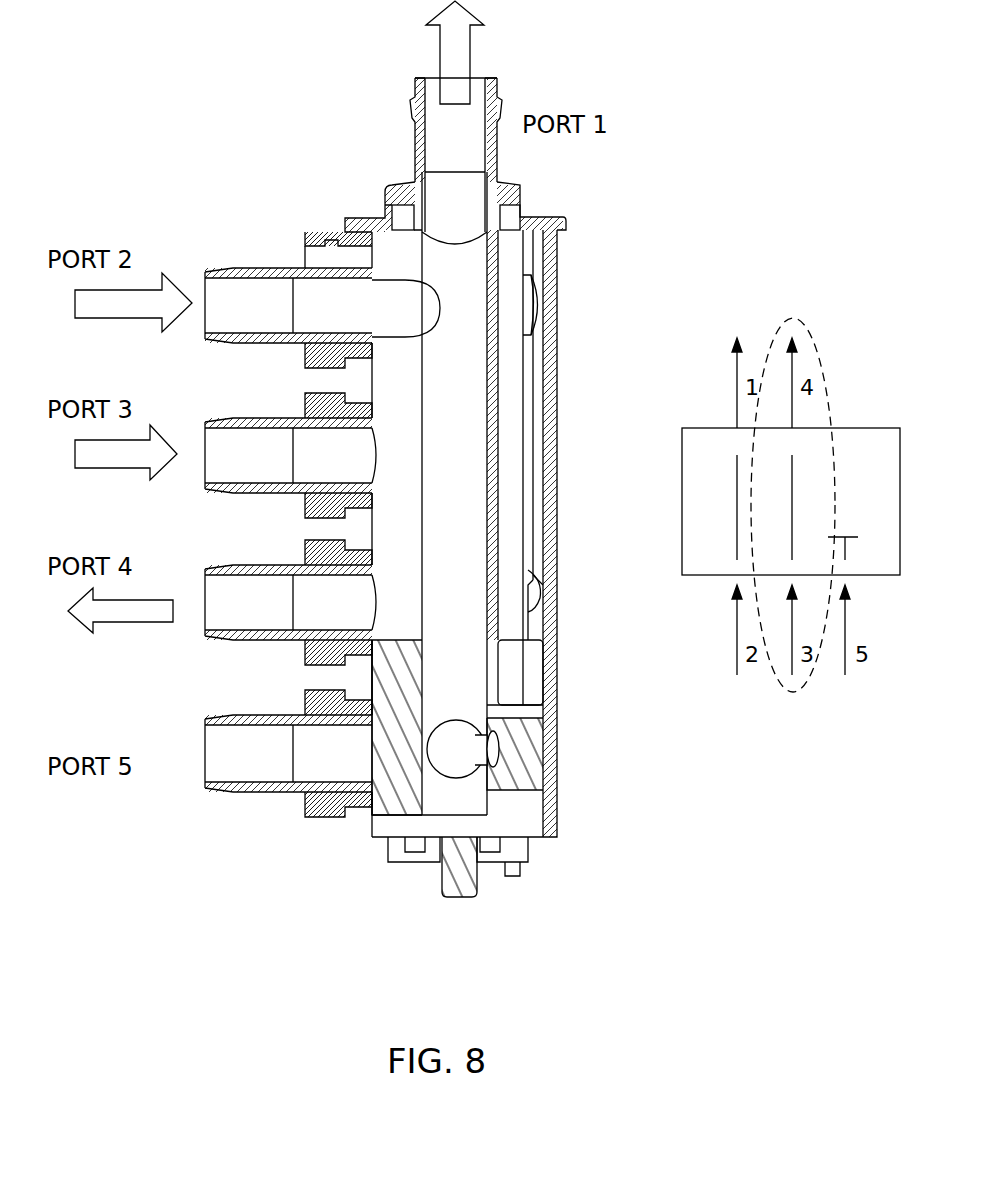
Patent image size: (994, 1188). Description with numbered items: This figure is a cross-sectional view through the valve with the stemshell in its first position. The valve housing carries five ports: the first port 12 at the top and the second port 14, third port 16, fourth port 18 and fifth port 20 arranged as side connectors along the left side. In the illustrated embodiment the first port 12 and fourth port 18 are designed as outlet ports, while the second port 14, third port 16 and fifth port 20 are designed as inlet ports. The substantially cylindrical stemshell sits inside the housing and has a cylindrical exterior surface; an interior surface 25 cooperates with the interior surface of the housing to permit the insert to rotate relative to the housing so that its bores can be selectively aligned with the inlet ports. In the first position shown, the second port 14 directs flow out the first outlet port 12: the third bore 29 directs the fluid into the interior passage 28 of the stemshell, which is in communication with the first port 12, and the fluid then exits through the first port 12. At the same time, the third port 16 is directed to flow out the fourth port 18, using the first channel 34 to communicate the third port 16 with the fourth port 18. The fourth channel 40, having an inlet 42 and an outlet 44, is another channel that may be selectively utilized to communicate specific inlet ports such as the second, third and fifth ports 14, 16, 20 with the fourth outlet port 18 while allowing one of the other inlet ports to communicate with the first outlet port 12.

The first port 12 is at (472, 114).
The second port 14 is at (200, 320).
The third port 16 is at (200, 468).
The fourth port 18 is at (200, 612).
The fifth port 20 is at (217, 757).
The interior surface 25 is at (540, 750).
The interior passage 28 is at (455, 212).
The third bore 29 is at (348, 235).
The first channel 34 is at (390, 508).
The fourth channel 40 is at (505, 418).
The inlet 42 is at (556, 281).
The outlet 44 is at (543, 586).